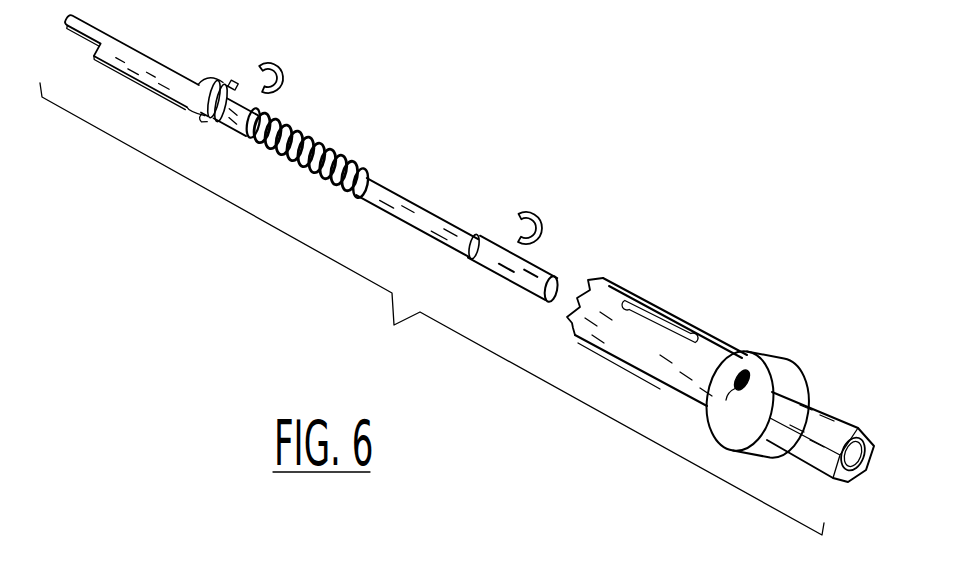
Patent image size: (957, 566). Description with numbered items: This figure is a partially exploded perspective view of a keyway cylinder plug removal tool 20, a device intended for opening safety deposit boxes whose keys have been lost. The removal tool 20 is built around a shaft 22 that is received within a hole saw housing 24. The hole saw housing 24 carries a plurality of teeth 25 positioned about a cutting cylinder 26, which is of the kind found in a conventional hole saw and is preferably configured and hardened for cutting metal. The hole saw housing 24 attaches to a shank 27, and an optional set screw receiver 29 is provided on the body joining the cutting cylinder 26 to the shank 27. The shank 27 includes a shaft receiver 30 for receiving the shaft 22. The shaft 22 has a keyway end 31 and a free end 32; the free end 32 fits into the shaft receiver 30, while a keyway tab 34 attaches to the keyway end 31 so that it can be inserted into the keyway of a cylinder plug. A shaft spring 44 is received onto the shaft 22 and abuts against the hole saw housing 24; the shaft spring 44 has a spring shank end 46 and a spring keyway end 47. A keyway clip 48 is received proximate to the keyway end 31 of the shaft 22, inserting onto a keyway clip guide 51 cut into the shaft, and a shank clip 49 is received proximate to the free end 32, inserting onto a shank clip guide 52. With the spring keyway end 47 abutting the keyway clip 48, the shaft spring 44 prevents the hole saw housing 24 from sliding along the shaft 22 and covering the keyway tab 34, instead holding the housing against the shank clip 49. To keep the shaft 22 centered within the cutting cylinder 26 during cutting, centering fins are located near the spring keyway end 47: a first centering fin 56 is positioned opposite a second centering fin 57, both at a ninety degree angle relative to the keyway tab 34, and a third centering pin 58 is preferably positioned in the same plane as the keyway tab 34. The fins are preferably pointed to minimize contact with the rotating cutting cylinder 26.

The removal tool 20 is at (432, 309).
The shaft 22 is at (385, 188).
The hole saw housing 24 is at (698, 380).
The teeth 25 is at (567, 316).
The cutting cylinder 26 is at (614, 306).
The shank 27 is at (827, 418).
The set screw receiver 29 is at (736, 398).
The shaft receiver 30 is at (855, 477).
The keyway end 31 is at (197, 76).
The free end 32 is at (546, 268).
The keyway tab 34 is at (130, 62).
The shaft spring 44 is at (293, 125).
The spring shank end 46 is at (352, 180).
The spring keyway end 47 is at (246, 112).
The keyway clip 48 is at (283, 77).
The shank clip 49 is at (539, 222).
The keyway clip guide 51 is at (225, 118).
The shank clip guide 52 is at (476, 243).
The first centering fin 56 is at (213, 72).
The second centering fin 57 is at (212, 117).
The third centering pin 58 is at (237, 87).